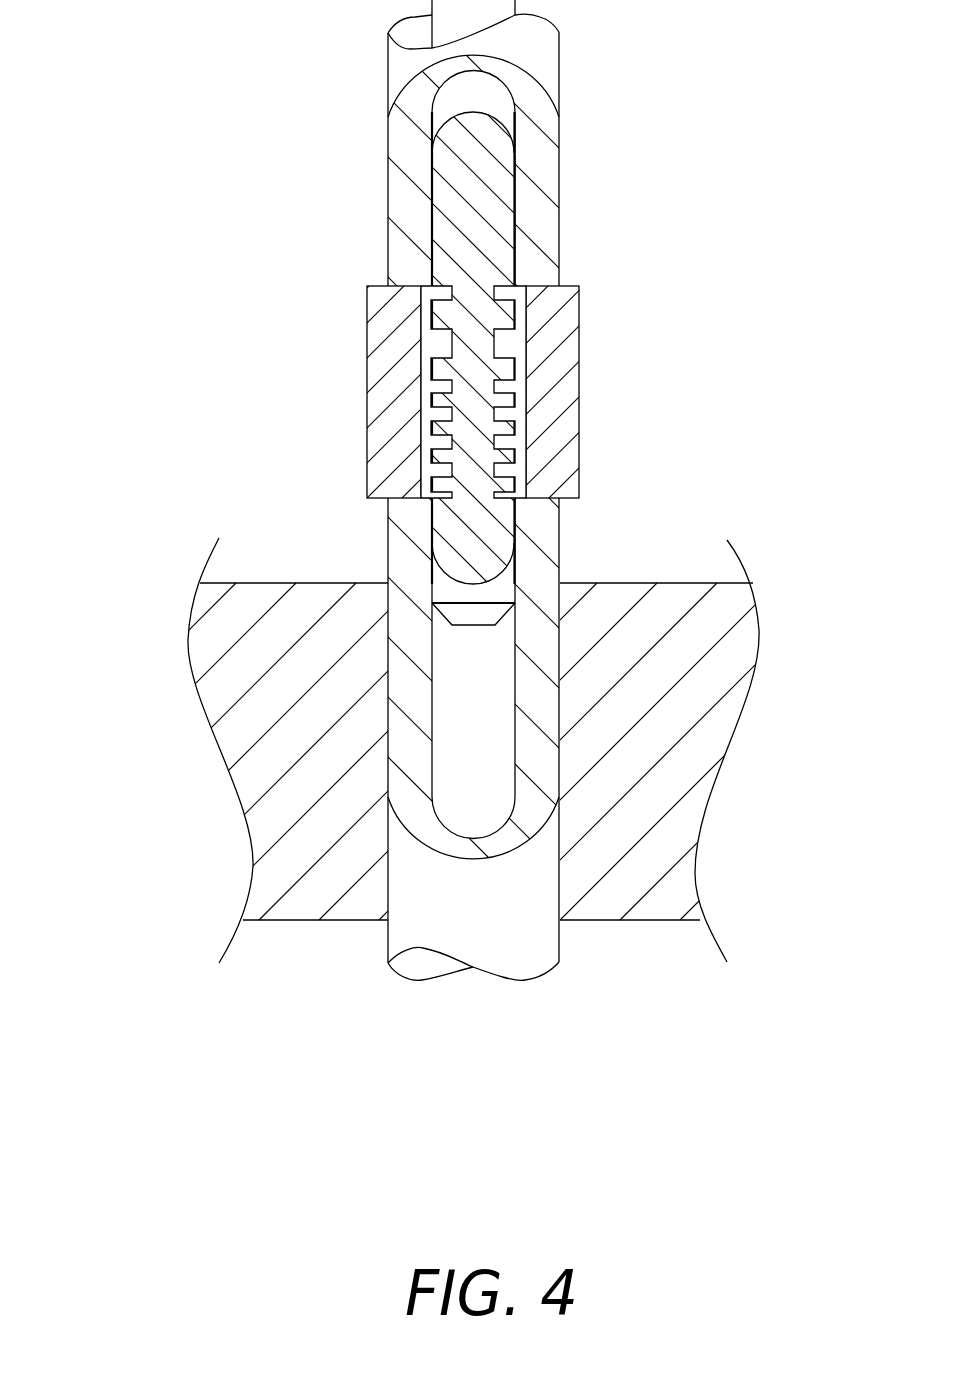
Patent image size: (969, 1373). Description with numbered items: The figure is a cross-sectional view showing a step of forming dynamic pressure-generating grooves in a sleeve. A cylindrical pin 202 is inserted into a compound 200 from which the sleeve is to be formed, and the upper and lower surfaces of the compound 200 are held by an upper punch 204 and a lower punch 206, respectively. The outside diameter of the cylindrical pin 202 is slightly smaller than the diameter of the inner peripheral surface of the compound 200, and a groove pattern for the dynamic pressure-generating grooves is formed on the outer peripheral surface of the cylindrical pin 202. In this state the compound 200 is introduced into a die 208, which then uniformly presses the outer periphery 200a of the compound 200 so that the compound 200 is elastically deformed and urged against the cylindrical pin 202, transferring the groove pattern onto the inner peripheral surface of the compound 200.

The compound 200 is at (484, 500).
The outer periphery 200a is at (367, 330).
The cylindrical pin 202 is at (473, 160).
The upper punch 204 is at (537, 202).
The lower punch 206 is at (413, 535).
The die 208 is at (643, 668).